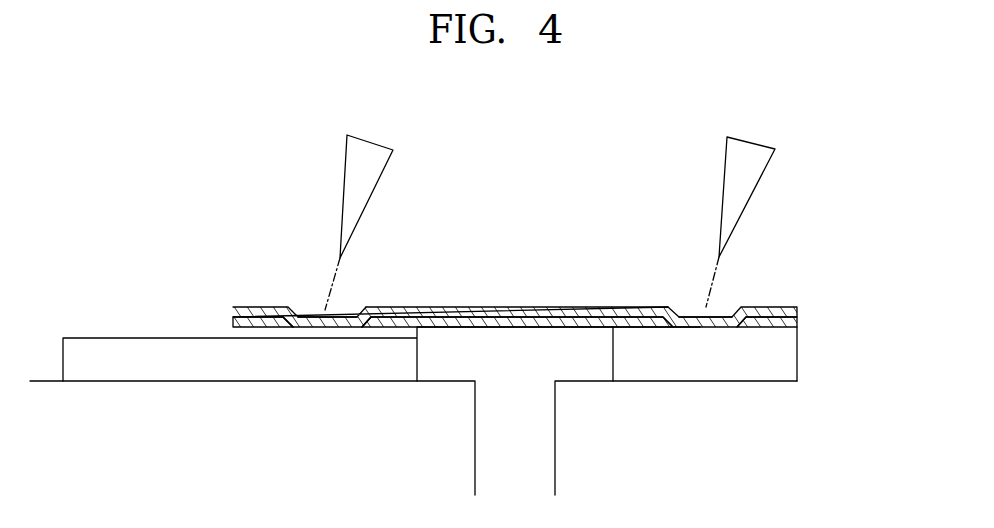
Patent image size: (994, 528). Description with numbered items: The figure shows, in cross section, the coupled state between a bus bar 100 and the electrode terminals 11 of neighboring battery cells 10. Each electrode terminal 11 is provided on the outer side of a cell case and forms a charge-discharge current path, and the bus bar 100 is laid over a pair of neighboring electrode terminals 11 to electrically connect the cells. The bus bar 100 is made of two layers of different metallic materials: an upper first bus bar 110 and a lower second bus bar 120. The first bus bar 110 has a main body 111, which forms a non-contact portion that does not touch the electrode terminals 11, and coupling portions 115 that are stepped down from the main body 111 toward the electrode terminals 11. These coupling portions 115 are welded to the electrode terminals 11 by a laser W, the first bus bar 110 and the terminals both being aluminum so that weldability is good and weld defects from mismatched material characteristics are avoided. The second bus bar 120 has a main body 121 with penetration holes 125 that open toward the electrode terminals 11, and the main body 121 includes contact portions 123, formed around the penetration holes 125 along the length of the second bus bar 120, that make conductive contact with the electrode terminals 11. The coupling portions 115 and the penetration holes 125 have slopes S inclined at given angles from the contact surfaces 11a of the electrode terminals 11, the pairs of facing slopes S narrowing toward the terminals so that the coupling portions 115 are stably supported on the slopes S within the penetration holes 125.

The battery cell 10 is at (640, 510).
The electrode terminal 11 is at (418, 333).
The contact surface 11a is at (658, 328).
The bus bar 100 is at (584, 339).
The first bus bar 110 is at (554, 278).
The main body 111 is at (420, 305).
The coupling portion 115 is at (321, 312).
The second bus bar 120 is at (557, 377).
The main body 121 is at (520, 326).
The contact portion 123 is at (377, 323).
The penetration hole 125 is at (292, 320).
The laser W is at (347, 168).
The slope S is at (676, 308).